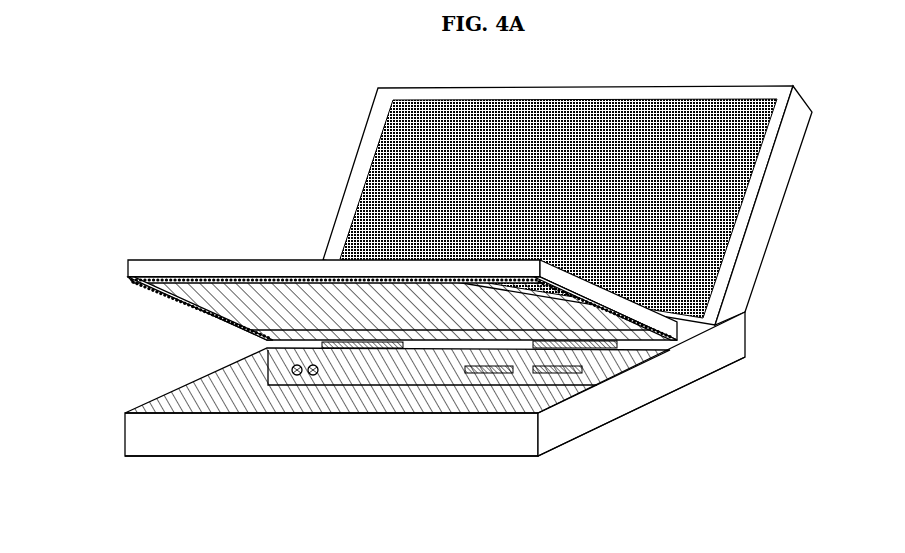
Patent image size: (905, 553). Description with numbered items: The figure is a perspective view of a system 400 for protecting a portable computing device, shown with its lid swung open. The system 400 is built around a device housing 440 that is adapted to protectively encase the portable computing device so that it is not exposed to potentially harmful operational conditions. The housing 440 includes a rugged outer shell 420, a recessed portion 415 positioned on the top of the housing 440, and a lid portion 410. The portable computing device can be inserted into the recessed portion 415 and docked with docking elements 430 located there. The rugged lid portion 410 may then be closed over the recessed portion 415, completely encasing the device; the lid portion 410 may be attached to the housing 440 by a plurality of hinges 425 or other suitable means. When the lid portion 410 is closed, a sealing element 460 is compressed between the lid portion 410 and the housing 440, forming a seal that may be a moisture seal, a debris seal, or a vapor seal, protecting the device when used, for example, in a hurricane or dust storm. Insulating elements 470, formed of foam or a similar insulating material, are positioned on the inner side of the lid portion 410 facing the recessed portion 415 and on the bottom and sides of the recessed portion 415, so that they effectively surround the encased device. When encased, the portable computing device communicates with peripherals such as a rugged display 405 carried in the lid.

The system 400 is at (426, 286).
The rugged display 405 is at (417, 132).
The lid portion 410 is at (426, 290).
The recessed portion 415 is at (173, 393).
The rugged outer shell 420 is at (407, 419).
The hinges 425 is at (623, 345).
The docking elements 430 is at (343, 377).
The device housing 440 is at (373, 458).
The sealing element 460 is at (138, 285).
The insulating elements 470 is at (247, 305).